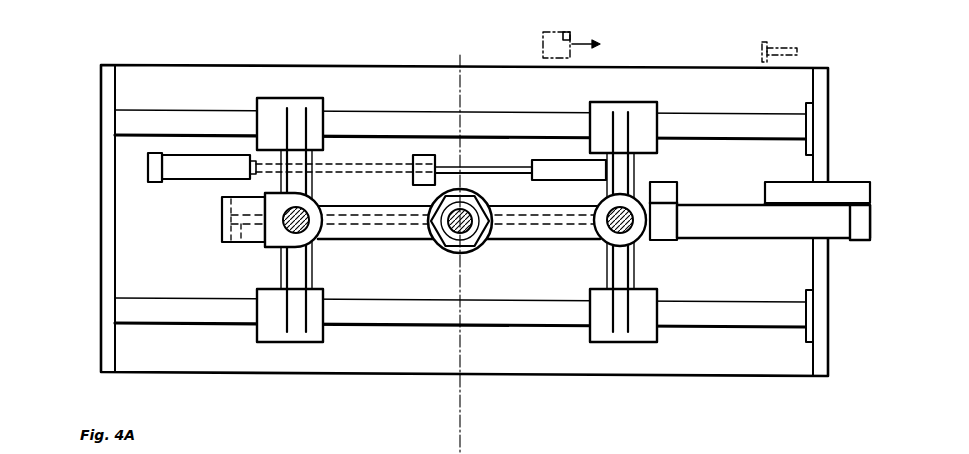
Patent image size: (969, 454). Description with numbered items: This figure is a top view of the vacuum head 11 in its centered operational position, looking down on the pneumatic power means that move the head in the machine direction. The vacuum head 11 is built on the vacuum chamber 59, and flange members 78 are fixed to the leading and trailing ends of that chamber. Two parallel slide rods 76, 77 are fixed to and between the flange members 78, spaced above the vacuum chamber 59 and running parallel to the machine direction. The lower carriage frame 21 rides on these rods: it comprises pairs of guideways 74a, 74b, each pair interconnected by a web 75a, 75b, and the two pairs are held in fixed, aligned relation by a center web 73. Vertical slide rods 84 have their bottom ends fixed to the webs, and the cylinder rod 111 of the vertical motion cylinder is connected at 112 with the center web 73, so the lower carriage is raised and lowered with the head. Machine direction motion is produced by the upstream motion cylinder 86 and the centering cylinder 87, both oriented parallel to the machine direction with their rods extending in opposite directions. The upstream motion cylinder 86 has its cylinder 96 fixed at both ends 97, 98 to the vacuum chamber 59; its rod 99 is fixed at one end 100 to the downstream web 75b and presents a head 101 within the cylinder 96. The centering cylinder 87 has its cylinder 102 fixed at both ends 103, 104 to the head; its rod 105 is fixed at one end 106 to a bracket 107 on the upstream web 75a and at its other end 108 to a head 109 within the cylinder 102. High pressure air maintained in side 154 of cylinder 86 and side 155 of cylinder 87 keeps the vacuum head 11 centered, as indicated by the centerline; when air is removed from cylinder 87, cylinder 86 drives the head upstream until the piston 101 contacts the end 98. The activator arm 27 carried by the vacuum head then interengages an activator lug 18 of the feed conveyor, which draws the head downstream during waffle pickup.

The vacuum head 11 is at (60, 395).
The head activator lug 18 is at (575, 30).
The lower carriage frame 21 is at (664, 100).
The activator arm 27 is at (775, 40).
The vacuum chamber 59 is at (492, 254).
The center web 73 is at (524, 241).
The guideway 74a is at (298, 101).
The guideway 74b is at (607, 112).
The web 75a is at (300, 270).
The web 75b is at (624, 271).
The slide rod 76 is at (189, 96).
The slide rod 77 is at (156, 326).
The flange member 78 is at (105, 72).
The slide rod 84 is at (288, 232).
The upstream motion cylinder 86 is at (189, 185).
The centering cylinder 87 is at (771, 245).
The cylinder 96 is at (342, 158).
The end 97 is at (150, 178).
The end 98 is at (428, 153).
The rod 99 is at (476, 167).
The end 100 is at (522, 160).
The head 101 is at (244, 164).
The cylinder 102 is at (749, 204).
The end 103 is at (860, 238).
The end 104 is at (663, 244).
The rod 105 is at (562, 217).
The end 106 is at (237, 244).
The bracket 107 is at (222, 220).
The end 108 is at (682, 192).
The head 109 is at (687, 220).
The cylinder rod 111 is at (450, 233).
The connection 112 is at (462, 247).
The side 154 is at (205, 161).
The side 155 is at (800, 224).